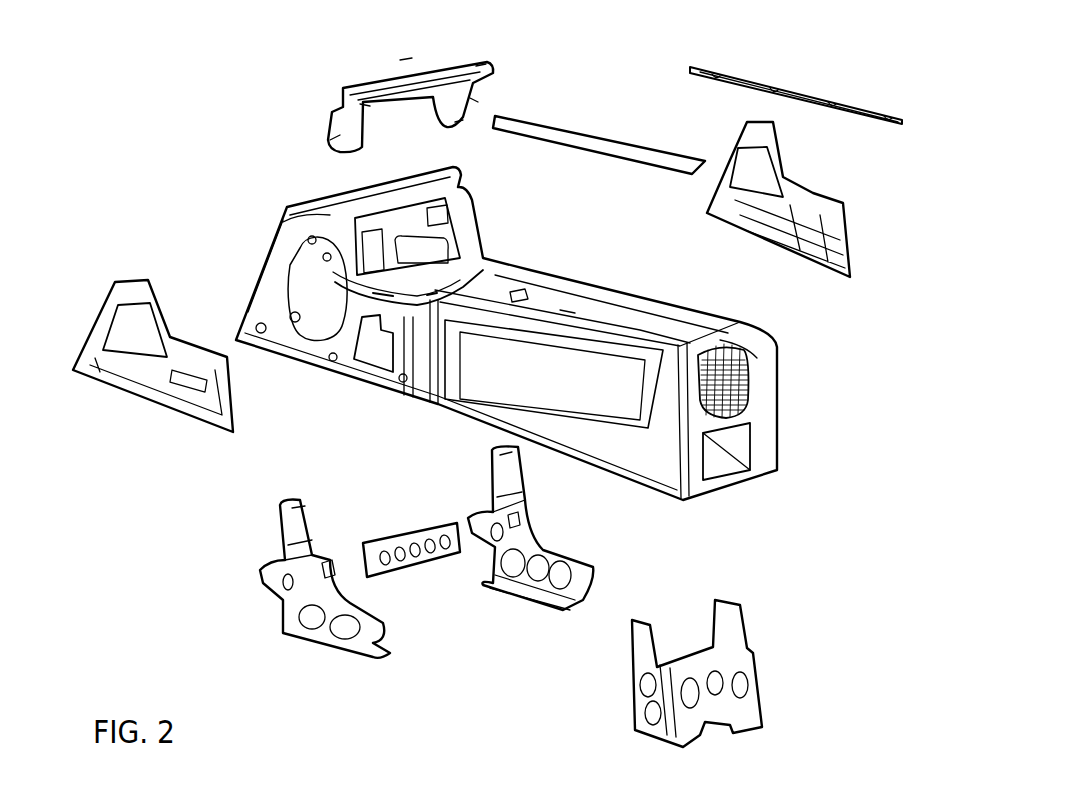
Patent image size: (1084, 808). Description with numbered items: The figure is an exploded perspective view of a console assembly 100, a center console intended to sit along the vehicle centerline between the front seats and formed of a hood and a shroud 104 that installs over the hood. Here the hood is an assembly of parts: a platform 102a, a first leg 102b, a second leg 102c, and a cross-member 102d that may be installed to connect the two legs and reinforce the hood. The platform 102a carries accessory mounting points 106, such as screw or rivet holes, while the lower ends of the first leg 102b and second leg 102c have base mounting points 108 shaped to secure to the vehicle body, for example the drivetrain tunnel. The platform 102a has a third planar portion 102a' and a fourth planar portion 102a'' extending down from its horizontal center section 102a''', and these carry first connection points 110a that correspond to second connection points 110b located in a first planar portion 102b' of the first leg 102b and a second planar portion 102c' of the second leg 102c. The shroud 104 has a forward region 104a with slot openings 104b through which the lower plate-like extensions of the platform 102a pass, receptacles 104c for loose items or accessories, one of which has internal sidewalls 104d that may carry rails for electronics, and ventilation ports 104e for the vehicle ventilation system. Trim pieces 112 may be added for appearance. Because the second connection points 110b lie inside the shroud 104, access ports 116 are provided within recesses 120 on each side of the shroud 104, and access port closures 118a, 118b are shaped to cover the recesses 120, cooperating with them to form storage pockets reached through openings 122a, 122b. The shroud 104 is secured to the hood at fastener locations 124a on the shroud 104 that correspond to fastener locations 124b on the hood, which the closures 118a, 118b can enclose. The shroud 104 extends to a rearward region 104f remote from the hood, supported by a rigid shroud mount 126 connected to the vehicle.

The console assembly 100 is at (221, 146).
The platform 102a is at (410, 97).
The third planar portion 102a' is at (400, 131).
The fourth planar portion 102a'' is at (513, 91).
The bracket cross member 102a''' is at (422, 35).
The first leg 102b is at (429, 566).
The first planar portion 102b' is at (285, 474).
The second leg 102c is at (548, 564).
The second planar portion 102c' is at (466, 460).
The cross-member 102d is at (410, 523).
The shroud 104 is at (787, 365).
The forward region 104a is at (290, 205).
The openings 104b is at (483, 255).
The receptacles 104c is at (535, 255).
The internal sidewalls 104d is at (660, 310).
The ventilation ports 104e is at (795, 400).
The rearward region 104f is at (790, 455).
The accessory mounting points 106 is at (480, 68).
The base mounting points 108 is at (518, 595).
The first connection points 110a is at (330, 140).
The second connection points 110b is at (310, 510).
The trim pieces 112 is at (598, 130).
The access ports 116 is at (358, 190).
The access port closure 118a is at (130, 275).
The access port closure 118b is at (840, 190).
The recesses 120 is at (305, 360).
The opening 122a is at (125, 320).
The opening 122b is at (770, 163).
The fastener locations 124a is at (300, 320).
The fastener locations 124b is at (290, 527).
The shroud mount 126 is at (630, 705).